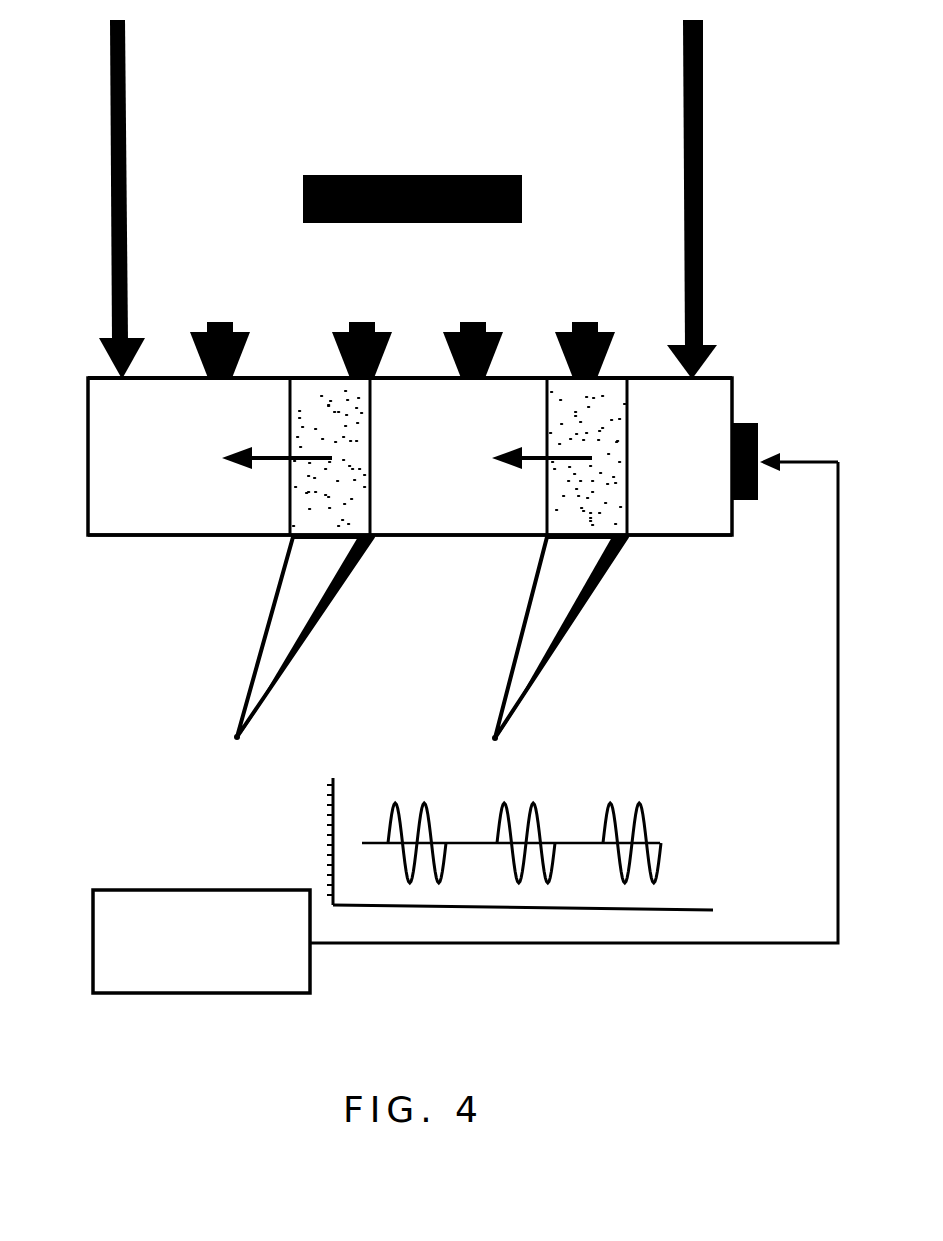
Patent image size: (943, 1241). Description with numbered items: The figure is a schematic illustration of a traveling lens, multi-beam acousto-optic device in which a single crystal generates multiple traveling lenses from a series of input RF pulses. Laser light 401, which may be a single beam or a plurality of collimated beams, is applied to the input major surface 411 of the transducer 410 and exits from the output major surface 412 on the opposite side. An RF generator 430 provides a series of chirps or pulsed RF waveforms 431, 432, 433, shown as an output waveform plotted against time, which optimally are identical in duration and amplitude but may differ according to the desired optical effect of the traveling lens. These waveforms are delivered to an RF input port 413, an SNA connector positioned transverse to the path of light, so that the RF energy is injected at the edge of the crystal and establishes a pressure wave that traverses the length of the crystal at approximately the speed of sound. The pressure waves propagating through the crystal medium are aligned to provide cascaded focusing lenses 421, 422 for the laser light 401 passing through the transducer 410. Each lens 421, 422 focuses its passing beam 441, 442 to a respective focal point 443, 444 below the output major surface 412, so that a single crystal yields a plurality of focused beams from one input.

The laser light 401 is at (492, 88).
The transducer 410 is at (733, 380).
The input major surface 411 is at (515, 378).
The output major surface 412 is at (418, 545).
The RF input port 413 is at (770, 428).
The focusing lens 421 is at (395, 490).
The focusing lens 422 is at (632, 490).
The RF generator 430 is at (164, 888).
The pulsed RF waveform 431 is at (416, 819).
The pulsed RF waveform 432 is at (521, 817).
The pulsed RF waveform 433 is at (662, 832).
The passing beam 441 is at (266, 637).
The passing beam 442 is at (531, 637).
The focal point 443 is at (228, 736).
The focal point 444 is at (496, 728).